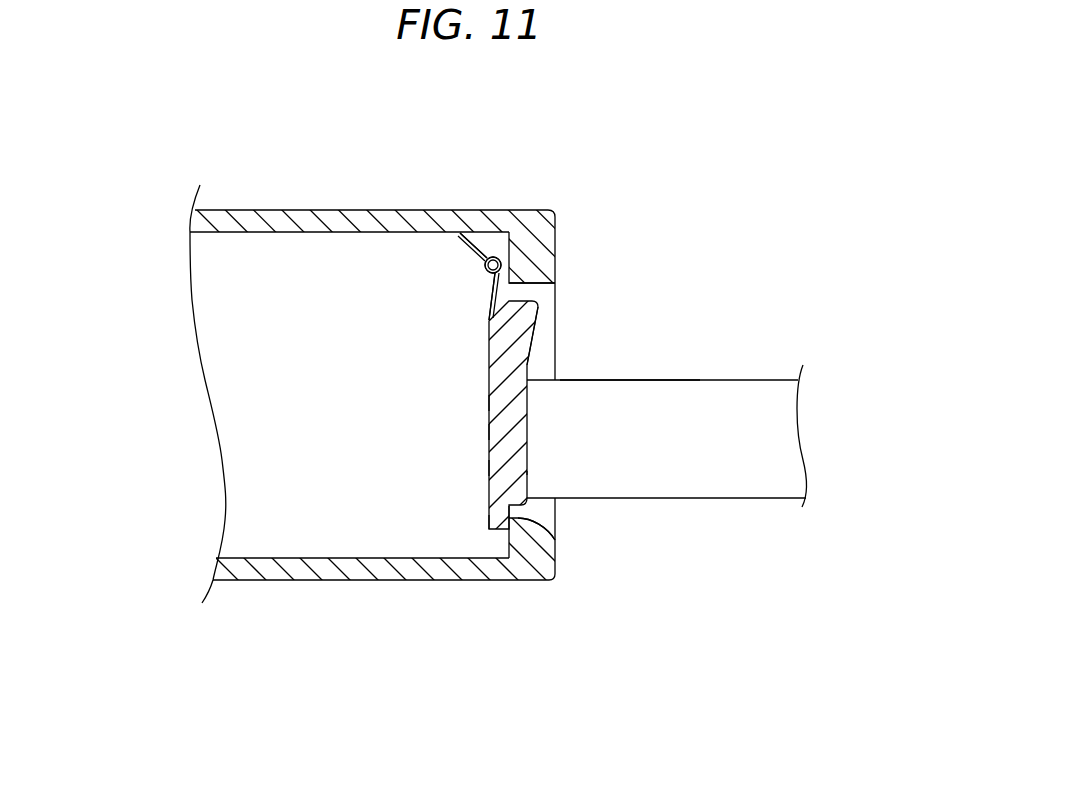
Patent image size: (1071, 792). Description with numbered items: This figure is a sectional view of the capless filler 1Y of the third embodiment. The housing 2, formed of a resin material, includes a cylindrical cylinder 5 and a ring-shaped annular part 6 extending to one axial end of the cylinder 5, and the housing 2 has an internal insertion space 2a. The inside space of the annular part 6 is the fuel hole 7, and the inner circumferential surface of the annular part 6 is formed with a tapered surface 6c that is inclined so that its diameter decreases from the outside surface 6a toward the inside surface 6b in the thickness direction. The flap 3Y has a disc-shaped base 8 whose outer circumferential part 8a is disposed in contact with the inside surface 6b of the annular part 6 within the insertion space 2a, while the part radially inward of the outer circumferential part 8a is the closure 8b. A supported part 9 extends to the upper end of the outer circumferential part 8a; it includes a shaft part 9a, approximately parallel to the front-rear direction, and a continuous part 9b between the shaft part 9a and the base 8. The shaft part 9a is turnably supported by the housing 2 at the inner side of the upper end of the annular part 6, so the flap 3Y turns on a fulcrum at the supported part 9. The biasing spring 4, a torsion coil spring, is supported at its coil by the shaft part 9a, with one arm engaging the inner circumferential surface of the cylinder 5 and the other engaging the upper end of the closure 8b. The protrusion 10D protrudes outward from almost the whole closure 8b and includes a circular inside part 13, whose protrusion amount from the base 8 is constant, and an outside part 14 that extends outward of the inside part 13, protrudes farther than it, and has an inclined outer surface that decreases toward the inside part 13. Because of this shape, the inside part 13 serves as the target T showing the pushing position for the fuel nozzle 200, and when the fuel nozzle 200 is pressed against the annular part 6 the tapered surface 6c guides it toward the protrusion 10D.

The capless filler 1Y is at (160, 165).
The housing 2 is at (242, 217).
The insertion space 2a is at (237, 299).
The flap 3Y is at (489, 468).
The biasing spring 4 is at (489, 277).
The cylinder 5 is at (292, 573).
The annular part 6 is at (555, 251).
The outside surface 6a is at (555, 277).
The inside surface 6b is at (509, 546).
The tapered surface 6c is at (547, 539).
The fuel hole 7 is at (525, 520).
The base 8 is at (489, 432).
The outer circumferential part 8a is at (489, 523).
The closure 8b is at (489, 403).
The supported part 9 is at (495, 257).
The shaft part 9a is at (490, 256).
The continuous part 9b is at (507, 262).
The protrusion 10D is at (531, 320).
The inside part 13 is at (528, 407).
The outside part 14 is at (531, 343).
The target T is at (527, 471).
The fuel nozzle 200 is at (747, 488).